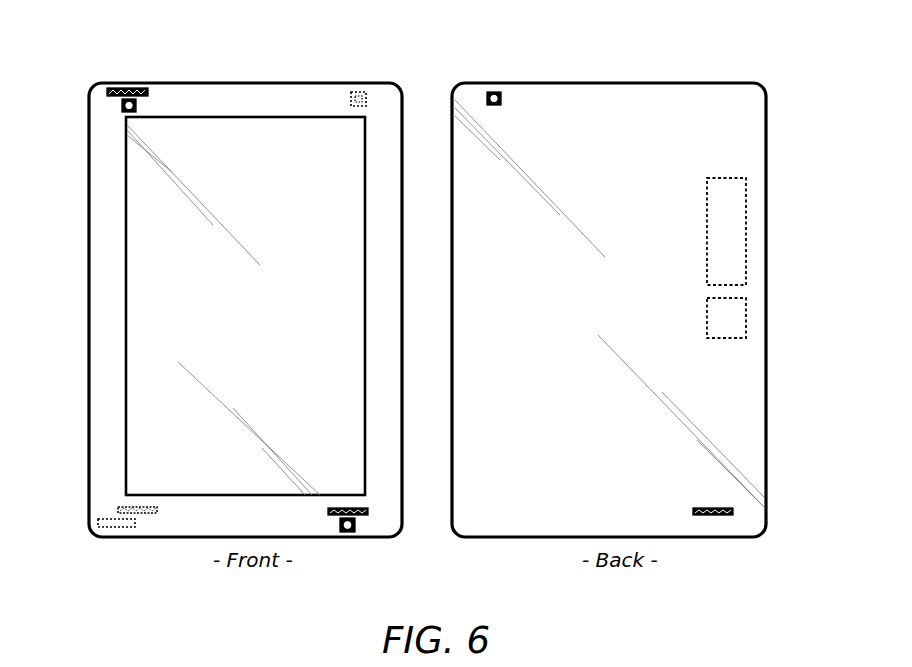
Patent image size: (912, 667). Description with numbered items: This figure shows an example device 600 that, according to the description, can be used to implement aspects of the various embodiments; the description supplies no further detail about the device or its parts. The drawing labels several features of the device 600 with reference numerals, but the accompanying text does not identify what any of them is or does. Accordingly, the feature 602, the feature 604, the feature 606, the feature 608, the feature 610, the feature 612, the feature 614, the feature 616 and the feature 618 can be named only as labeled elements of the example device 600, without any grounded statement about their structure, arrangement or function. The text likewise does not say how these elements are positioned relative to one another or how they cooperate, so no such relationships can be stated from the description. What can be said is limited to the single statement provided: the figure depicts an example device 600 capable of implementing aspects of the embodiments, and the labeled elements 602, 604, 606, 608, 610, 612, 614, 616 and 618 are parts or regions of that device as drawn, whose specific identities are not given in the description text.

The portable computing device 600 is at (791, 89).
The display screen 602 is at (125, 230).
The front-facing camera 604 is at (120, 105).
The speaker 606 is at (138, 90).
The speaker 608 is at (360, 515).
The camera / light sensor 610 is at (355, 93).
The microphone 612 is at (140, 513).
The battery / internal component 614 is at (746, 248).
The internal component 616 is at (746, 322).
The connector port 618 is at (115, 527).